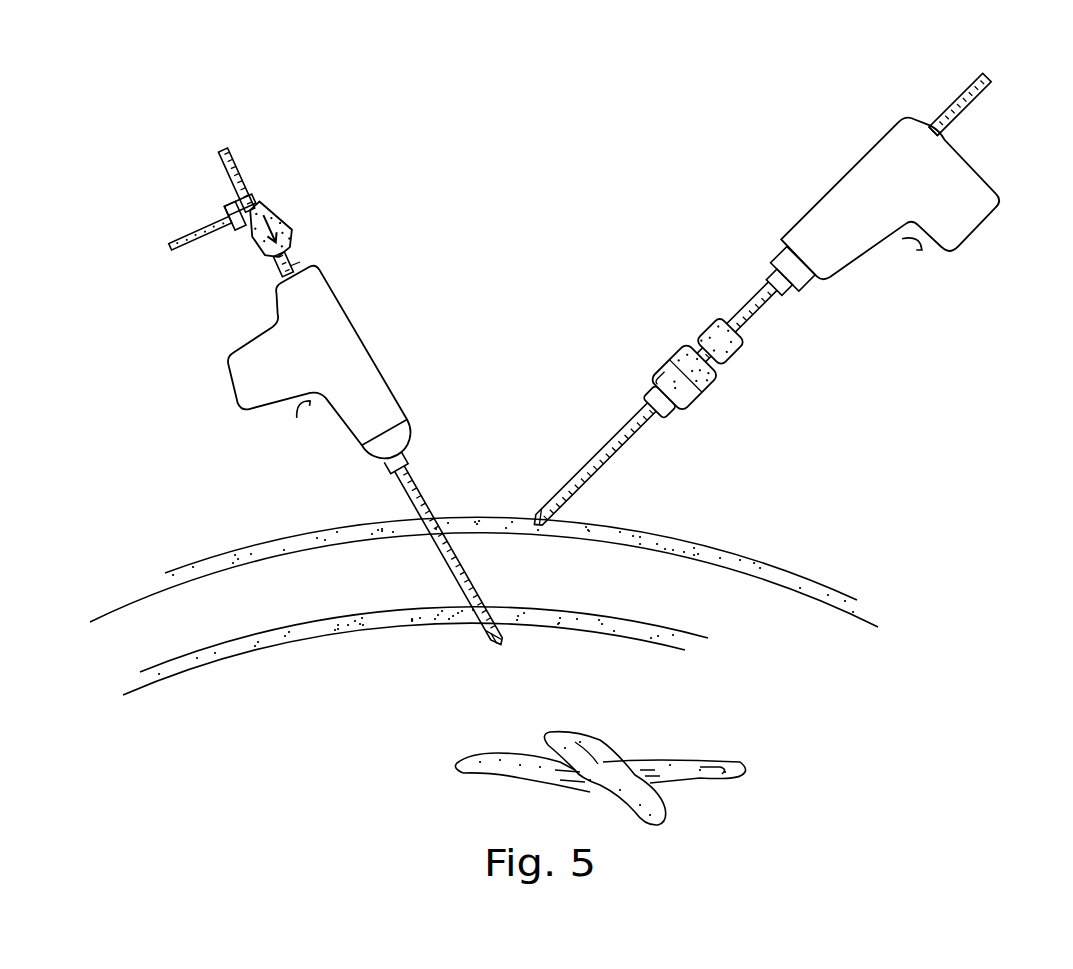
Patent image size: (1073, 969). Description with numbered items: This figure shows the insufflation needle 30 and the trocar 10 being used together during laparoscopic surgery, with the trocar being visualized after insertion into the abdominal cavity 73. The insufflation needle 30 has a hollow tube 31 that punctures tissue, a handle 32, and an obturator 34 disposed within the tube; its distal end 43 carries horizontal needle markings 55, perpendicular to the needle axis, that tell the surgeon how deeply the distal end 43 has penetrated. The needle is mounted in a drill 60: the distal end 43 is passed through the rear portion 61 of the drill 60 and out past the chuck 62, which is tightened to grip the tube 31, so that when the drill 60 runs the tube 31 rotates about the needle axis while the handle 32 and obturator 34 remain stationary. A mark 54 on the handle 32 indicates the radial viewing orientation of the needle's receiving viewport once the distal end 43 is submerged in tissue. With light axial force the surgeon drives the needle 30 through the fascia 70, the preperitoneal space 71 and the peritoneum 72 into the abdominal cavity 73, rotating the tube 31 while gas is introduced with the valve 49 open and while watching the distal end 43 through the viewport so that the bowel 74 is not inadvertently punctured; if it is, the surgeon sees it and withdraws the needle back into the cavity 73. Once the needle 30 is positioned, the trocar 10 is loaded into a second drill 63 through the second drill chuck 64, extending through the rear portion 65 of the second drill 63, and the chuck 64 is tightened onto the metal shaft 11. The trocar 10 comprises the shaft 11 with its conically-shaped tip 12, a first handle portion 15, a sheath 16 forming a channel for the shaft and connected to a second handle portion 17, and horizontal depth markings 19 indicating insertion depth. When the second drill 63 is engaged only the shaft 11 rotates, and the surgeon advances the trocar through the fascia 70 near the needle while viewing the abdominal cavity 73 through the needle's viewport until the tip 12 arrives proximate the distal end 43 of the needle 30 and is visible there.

The trocar 10 is at (786, 311).
The metal shaft 11 is at (760, 300).
The conically-shaped tip 12 is at (540, 517).
The first handle portion 15 is at (720, 341).
The sheath 16 is at (660, 402).
The second handle portion 17 is at (684, 377).
The horizontal depth markings 19 is at (657, 405).
The insufflation needle 30 is at (450, 557).
The hollow tube 31 is at (265, 321).
The handle 32 is at (269, 228).
The obturator 34 is at (493, 639).
The distal end 43 is at (493, 635).
The valve 49 is at (200, 218).
The mark 54 is at (257, 230).
The horizontal needle markings 55 is at (450, 552).
The drill 60 is at (343, 409).
The rear portion 61 is at (320, 240).
The chuck 62 is at (396, 462).
The second drill 63 is at (880, 233).
The second drill chuck 64 is at (787, 274).
The rear portion 65 is at (933, 131).
The fascia 70 is at (208, 572).
The preperitoneal space 71 is at (210, 612).
The peritoneum 72 is at (205, 660).
The abdominal cavity 73 is at (265, 697).
The bowel 74 is at (600, 775).